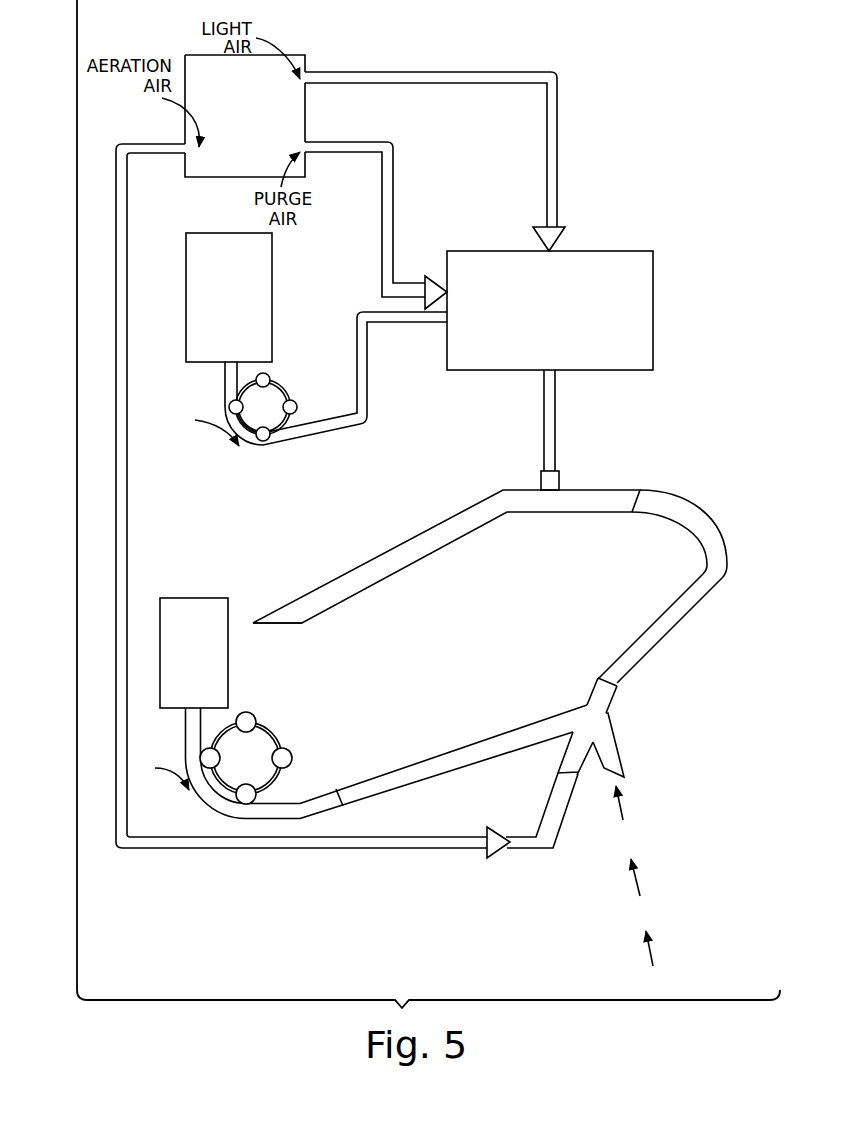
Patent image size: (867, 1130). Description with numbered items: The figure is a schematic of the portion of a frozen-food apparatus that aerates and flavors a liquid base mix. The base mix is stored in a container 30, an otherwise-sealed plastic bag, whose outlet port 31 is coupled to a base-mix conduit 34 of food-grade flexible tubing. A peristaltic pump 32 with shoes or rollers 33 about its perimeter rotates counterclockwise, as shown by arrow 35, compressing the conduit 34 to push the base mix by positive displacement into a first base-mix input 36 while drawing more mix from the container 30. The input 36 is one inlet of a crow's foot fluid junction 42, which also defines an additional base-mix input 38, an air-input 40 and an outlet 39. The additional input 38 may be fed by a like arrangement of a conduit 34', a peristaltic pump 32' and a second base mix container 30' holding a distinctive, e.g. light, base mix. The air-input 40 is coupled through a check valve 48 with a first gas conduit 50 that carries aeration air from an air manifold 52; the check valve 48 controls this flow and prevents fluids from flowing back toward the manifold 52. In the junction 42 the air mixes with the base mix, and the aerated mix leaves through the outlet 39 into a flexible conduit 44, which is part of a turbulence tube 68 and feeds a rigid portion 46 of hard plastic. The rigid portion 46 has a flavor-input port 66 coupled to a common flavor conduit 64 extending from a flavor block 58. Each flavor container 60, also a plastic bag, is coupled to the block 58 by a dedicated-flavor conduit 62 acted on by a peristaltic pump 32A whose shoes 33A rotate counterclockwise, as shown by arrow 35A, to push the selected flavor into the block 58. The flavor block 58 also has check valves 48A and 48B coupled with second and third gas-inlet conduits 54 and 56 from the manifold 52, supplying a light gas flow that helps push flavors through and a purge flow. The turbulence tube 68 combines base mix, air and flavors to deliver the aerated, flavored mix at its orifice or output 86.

The container 30 is at (194, 653).
The second base mix container 30' is at (658, 962).
The outlet port 31 is at (188, 722).
The peristaltic pump 32 is at (282, 750).
The peristaltic pump 32' is at (641, 890).
The shoes or rollers 33 is at (254, 718).
The base-mix conduit 34 is at (237, 790).
The conduit 34' is at (617, 815).
The arrow 35 is at (163, 768).
The first base-mix input 36 is at (513, 742).
The additional base-mix input 38 is at (612, 748).
The outlet 39 is at (613, 690).
The air-input 40 is at (577, 767).
The fluid junction 42 is at (598, 693).
The conduit 44 is at (647, 638).
The rigid portion 46 is at (440, 530).
The check valve 48 is at (500, 836).
The check valve 48A is at (560, 240).
The check valve 48B is at (440, 292).
The first gas conduit 50 is at (129, 147).
The air manifold 52 is at (237, 91).
The second gas-inlet conduit 54 is at (358, 79).
The third gas-inlet conduit 56 is at (350, 151).
The flavor block 58 is at (539, 297).
The flavor container 60 is at (219, 329).
The dedicated-flavor conduit 62 is at (367, 390).
The common flavor conduit 64 is at (553, 405).
The flavor-input port 66 is at (553, 484).
The turbulence tube 68 is at (660, 479).
The orifice or output 86 is at (284, 618).
The peristaltic pump 32A is at (296, 392).
The shoes or rollers 33A is at (268, 377).
The arrow 35A is at (197, 429).